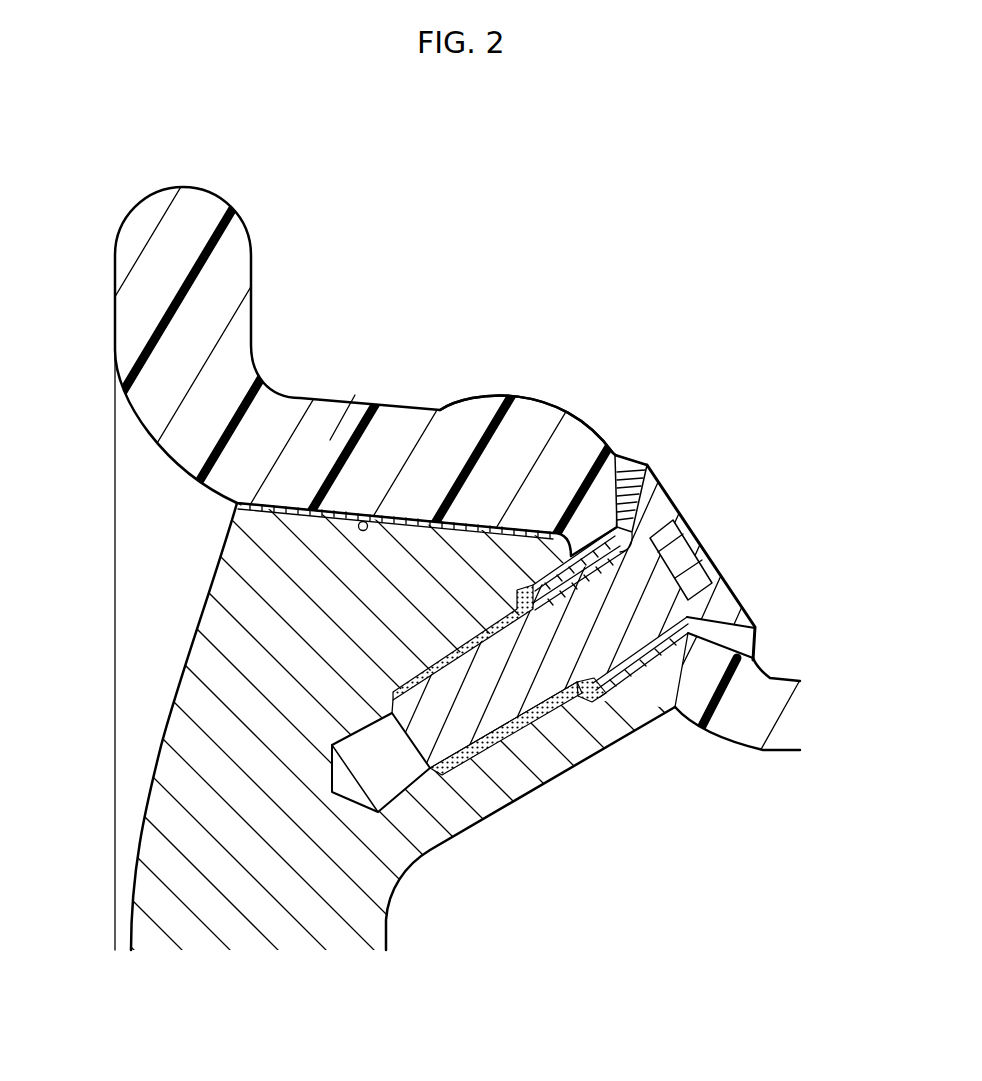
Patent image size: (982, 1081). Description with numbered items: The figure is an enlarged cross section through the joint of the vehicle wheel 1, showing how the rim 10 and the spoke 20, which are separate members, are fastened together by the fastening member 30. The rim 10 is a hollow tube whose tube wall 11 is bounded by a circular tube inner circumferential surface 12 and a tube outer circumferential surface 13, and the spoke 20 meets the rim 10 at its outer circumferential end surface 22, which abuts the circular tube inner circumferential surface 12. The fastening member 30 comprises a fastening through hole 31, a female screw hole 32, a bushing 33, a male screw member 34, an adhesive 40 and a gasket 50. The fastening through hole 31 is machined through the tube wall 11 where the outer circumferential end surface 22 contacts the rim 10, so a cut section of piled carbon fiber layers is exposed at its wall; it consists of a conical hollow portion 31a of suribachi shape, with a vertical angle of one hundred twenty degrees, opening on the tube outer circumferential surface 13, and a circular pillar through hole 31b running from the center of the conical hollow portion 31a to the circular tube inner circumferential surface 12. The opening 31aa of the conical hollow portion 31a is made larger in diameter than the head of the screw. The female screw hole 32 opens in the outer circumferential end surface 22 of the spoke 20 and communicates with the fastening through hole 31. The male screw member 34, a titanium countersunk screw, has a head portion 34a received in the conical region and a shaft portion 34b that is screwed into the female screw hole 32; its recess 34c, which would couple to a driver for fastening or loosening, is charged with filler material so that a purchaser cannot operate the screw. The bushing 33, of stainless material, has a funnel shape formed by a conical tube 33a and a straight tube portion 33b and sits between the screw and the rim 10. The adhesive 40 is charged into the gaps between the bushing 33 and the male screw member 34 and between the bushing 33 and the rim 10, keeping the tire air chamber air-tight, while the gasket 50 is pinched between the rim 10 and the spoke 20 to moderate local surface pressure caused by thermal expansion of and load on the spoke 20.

The vehicle wheel 1 is at (153, 183).
The rim 10 is at (257, 281).
The tube wall 11 is at (325, 445).
The circular tube inner circumferential surface 12 is at (365, 516).
The tube outer circumferential surface 13 is at (440, 405).
The spoke 20 is at (188, 644).
The outer circumferential end surface 22 is at (234, 504).
The fastening member 30 is at (657, 314).
The fastening through hole 31 is at (757, 438).
The conical hollow portion 31a is at (650, 478).
The through hole 31b is at (655, 512).
The opening 31aa is at (755, 660).
The female screw hole 32 is at (398, 783).
The bushing 33 is at (700, 812).
The conical tube 33a is at (718, 640).
The straight tube portion 33b is at (642, 690).
The male screw member 34 is at (740, 587).
The head portion 34a is at (722, 606).
The shaft portion 34b is at (477, 707).
The recess 34c is at (702, 578).
The adhesive 40 is at (590, 702).
The gasket 50 is at (519, 528).